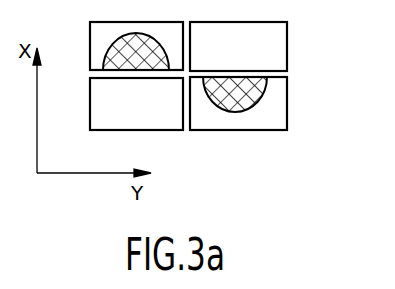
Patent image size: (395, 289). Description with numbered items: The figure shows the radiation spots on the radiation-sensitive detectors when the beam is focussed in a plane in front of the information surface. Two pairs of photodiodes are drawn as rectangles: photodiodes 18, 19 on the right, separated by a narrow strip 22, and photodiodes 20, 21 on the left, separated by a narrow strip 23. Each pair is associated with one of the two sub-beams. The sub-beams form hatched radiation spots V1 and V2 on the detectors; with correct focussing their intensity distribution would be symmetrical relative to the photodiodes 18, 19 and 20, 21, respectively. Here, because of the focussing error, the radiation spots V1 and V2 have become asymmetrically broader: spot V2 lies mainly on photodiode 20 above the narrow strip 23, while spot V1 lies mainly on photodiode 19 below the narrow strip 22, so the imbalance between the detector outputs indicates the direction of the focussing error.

The photodiode 18 is at (277, 35).
The photodiode 19 is at (275, 118).
The photodiode 20 is at (99, 33).
The photodiode 21 is at (108, 111).
The narrow strip 22 is at (288, 75).
The narrow strip 23 is at (90, 72).
The radiation spot V1 is at (268, 88).
The radiation spot V2 is at (108, 57).